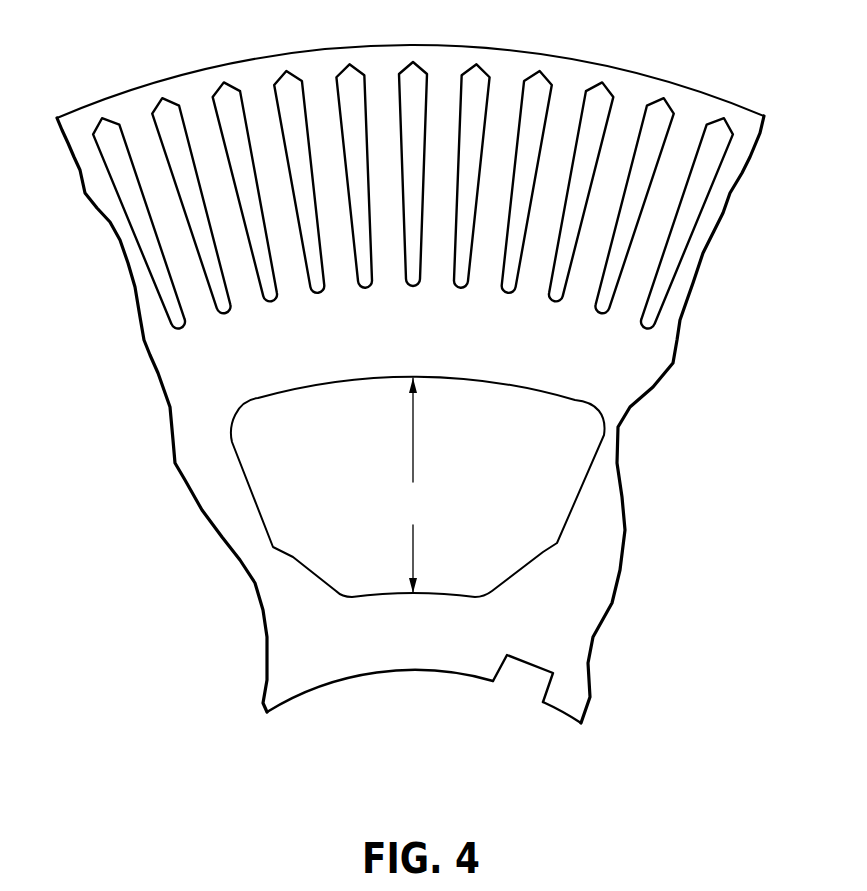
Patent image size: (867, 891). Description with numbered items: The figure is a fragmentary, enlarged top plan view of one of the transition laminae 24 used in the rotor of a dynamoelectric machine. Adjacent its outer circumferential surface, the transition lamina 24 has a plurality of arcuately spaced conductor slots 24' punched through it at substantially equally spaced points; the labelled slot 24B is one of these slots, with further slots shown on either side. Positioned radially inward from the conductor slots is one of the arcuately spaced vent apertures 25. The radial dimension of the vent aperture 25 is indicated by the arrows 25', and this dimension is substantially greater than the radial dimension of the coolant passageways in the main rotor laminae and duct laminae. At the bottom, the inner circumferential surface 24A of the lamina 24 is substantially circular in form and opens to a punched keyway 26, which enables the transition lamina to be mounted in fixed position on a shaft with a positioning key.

The transition lamina 24 is at (410, 364).
The conductor slot 24' is at (302, 151).
The inner circumferential surface 24A is at (348, 72).
The slot tooth tip 24B is at (412, 70).
The vent aperture 25 is at (418, 472).
The arrows 25' is at (412, 485).
The keyway 26 is at (524, 663).